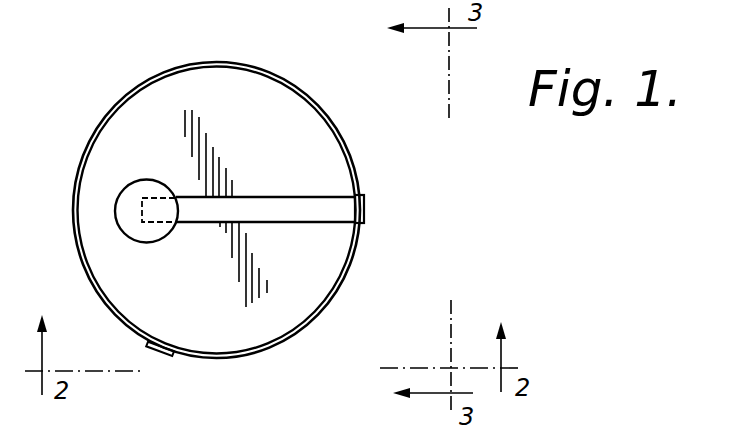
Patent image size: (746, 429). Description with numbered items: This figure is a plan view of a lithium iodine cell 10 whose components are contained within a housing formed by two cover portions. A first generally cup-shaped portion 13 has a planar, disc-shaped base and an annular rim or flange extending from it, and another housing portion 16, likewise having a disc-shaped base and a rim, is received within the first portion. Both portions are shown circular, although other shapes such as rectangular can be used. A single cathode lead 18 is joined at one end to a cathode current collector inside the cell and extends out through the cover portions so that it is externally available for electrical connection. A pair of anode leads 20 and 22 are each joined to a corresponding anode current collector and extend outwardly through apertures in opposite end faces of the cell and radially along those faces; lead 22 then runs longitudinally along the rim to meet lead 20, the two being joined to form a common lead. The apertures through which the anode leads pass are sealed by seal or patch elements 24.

The lithium iodine cell 10 is at (116, 89).
The first cup-shaped housing portion 13 is at (343, 142).
The second housing portion 16 is at (282, 298).
The cathode lead 18 is at (165, 357).
The anode lead 20 is at (273, 213).
The anode lead 22 is at (366, 205).
The seal element 24 is at (146, 180).